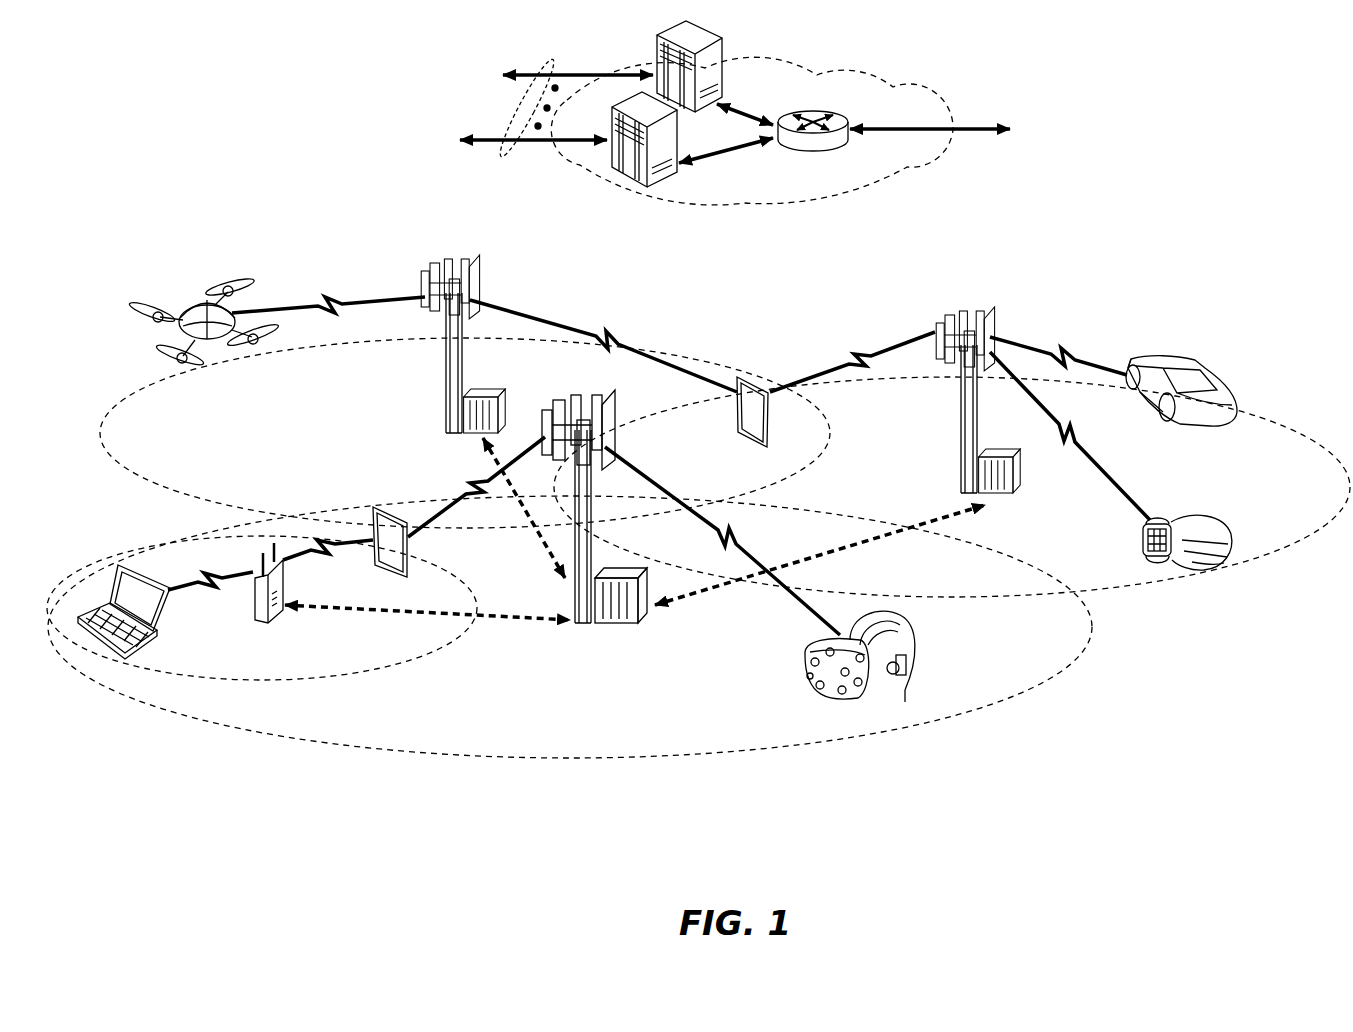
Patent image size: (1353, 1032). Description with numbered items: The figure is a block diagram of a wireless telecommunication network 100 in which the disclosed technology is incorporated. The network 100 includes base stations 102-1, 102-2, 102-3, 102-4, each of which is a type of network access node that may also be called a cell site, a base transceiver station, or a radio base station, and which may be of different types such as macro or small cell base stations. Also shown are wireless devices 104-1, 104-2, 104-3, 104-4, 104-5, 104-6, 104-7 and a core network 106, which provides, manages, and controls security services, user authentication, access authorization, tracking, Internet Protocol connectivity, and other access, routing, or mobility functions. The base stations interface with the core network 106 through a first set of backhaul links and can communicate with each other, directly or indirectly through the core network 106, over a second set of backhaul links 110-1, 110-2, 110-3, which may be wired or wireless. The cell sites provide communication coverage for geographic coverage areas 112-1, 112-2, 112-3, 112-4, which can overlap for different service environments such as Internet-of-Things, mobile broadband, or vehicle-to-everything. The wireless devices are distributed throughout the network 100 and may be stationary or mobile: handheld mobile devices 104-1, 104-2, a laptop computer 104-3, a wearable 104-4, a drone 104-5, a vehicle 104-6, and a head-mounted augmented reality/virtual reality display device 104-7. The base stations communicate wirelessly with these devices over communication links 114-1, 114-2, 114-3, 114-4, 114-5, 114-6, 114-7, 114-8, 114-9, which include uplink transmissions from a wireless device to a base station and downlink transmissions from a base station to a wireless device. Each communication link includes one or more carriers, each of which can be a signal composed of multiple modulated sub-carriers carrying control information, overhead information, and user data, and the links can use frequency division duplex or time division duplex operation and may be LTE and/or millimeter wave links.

The wireless telecommunication network 100 is at (1254, 118).
The core network 106 is at (842, 193).
The base station 102-1 is at (580, 632).
The base station 102-2 is at (445, 380).
The base station 102-3 is at (960, 405).
The base station 102-4 is at (257, 616).
The wireless device 104-1 is at (412, 556).
The wireless device 104-2 is at (737, 415).
The wireless device 104-3 is at (105, 648).
The wireless device 104-4 is at (1165, 517).
The wireless device 104-5 is at (215, 348).
The wireless device 104-6 is at (1195, 365).
The wireless device 104-7 is at (920, 645).
The backhaul link 110-1 is at (330, 612).
The backhaul link 110-2 is at (885, 538).
The backhaul link 110-3 is at (550, 538).
The geographic coverage area 112-1 is at (512, 758).
The geographic coverage area 112-2 is at (390, 668).
The geographic coverage area 112-3 is at (165, 487).
The geographic coverage area 112-4 is at (1265, 412).
The communication link 114-1 is at (740, 536).
The communication link 114-2 is at (470, 488).
The communication link 114-3 is at (200, 592).
The communication link 114-4 is at (330, 556).
The communication link 114-5 is at (330, 297).
The communication link 114-6 is at (608, 336).
The communication link 114-7 is at (860, 355).
The communication link 114-8 is at (1090, 455).
The communication link 114-9 is at (1060, 345).